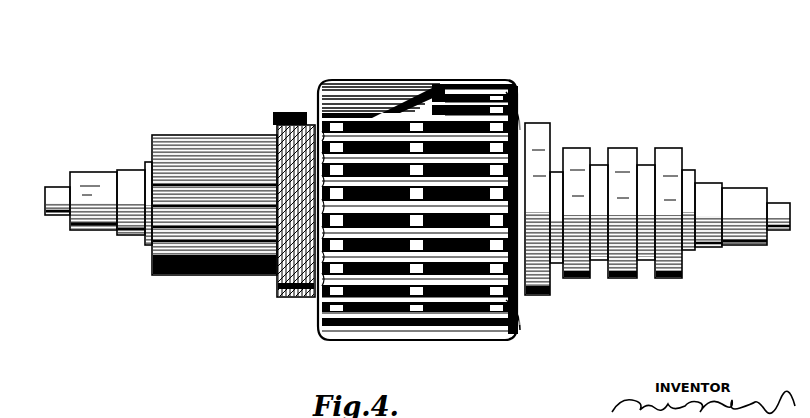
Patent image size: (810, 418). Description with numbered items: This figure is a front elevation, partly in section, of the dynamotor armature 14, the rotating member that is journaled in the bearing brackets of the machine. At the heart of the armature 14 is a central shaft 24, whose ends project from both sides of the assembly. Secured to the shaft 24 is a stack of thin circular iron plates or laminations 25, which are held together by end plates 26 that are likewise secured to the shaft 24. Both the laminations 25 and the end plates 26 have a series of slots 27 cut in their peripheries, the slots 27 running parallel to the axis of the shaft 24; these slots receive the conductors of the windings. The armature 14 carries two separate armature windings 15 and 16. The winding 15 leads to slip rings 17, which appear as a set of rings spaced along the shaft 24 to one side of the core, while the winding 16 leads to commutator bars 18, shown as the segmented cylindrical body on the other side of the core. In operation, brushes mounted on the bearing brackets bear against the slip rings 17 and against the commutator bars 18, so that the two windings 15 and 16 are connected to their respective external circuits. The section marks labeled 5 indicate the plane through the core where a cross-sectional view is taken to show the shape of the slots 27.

The armature 14 is at (82, 182).
The central shaft 24 is at (52, 215).
The commutator bars 18 is at (170, 177).
The armature winding 15 is at (318, 95).
The armature winding 16 is at (321, 81).
The laminations 25 is at (462, 341).
The end plates 26 is at (334, 80).
The slots 27 is at (520, 112).
The slip rings 17 is at (660, 280).
The starting box 5 is at (458, 124).